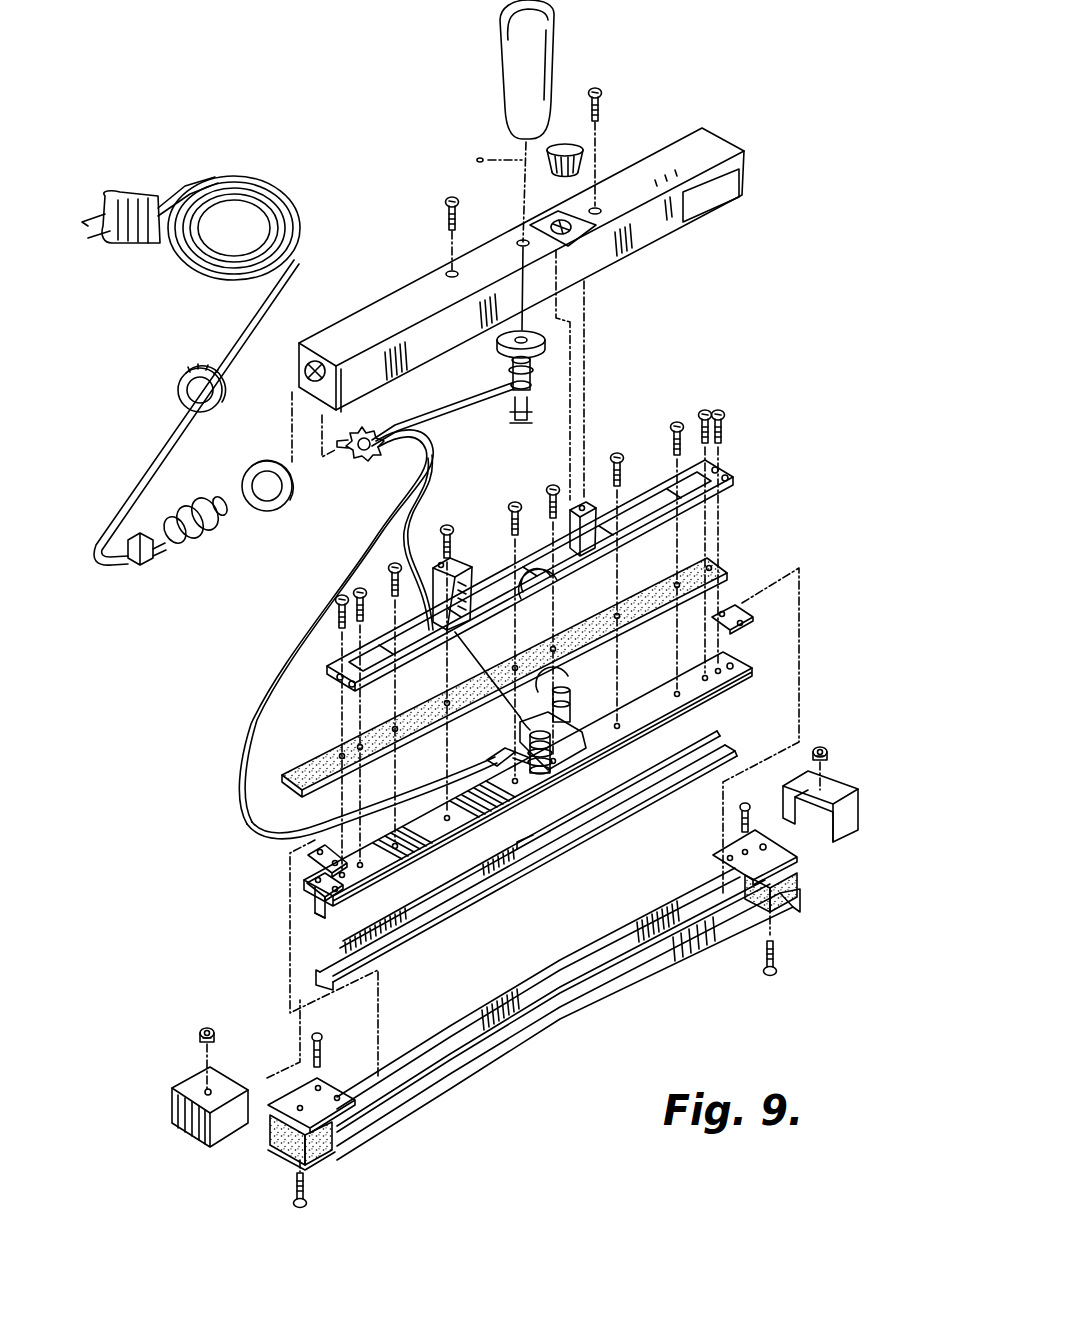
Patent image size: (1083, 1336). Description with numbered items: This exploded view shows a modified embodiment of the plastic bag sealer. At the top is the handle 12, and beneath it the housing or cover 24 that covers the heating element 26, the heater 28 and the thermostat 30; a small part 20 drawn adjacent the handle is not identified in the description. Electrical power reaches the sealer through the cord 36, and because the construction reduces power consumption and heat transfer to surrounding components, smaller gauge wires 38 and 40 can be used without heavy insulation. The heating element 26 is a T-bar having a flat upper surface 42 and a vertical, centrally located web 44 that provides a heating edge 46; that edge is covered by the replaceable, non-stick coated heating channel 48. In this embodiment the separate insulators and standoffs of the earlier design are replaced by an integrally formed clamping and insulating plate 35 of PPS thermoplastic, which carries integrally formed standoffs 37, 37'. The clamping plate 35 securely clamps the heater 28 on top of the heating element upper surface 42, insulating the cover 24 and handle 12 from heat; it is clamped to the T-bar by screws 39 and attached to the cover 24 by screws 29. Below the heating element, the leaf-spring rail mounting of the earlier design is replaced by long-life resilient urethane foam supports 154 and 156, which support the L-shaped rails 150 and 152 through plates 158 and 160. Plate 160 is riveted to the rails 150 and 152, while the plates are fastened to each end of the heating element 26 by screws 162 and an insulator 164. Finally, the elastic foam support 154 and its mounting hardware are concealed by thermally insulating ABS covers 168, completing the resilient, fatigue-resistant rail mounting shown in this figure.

The handle 12 is at (498, 66).
The knob 20 is at (561, 147).
The housing or cover 24 is at (747, 140).
The heating element 26 is at (742, 678).
The heater 28 is at (728, 560).
The screws 29 is at (603, 97).
The thermostat 30 is at (523, 730).
The clamping and insulating plate 35 is at (727, 473).
The cord 36 is at (267, 182).
The standoff 37 is at (466, 575).
The standoff 37' is at (604, 480).
The wire 38 is at (280, 640).
The screws 39 is at (678, 420).
The wire 40 is at (273, 822).
The flat upper surface 42 is at (724, 698).
The web 44 is at (312, 907).
The heating edge 46 is at (336, 915).
The heating channel 48 is at (488, 890).
The L-shaped rail 150 is at (678, 901).
The L-shaped rail 152 is at (653, 980).
The elastic foam support 154 is at (786, 870).
The elastic foam support 156 is at (292, 1167).
The plate 158 is at (796, 858).
The plate 160 is at (794, 901).
The screws 162 is at (736, 824).
The insulator 164 is at (756, 618).
The insulating covers 168 is at (846, 780).